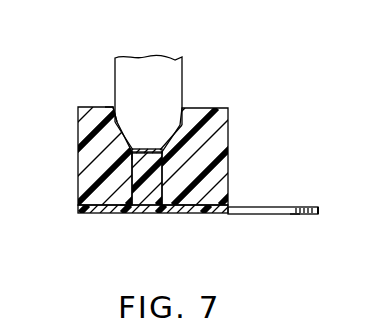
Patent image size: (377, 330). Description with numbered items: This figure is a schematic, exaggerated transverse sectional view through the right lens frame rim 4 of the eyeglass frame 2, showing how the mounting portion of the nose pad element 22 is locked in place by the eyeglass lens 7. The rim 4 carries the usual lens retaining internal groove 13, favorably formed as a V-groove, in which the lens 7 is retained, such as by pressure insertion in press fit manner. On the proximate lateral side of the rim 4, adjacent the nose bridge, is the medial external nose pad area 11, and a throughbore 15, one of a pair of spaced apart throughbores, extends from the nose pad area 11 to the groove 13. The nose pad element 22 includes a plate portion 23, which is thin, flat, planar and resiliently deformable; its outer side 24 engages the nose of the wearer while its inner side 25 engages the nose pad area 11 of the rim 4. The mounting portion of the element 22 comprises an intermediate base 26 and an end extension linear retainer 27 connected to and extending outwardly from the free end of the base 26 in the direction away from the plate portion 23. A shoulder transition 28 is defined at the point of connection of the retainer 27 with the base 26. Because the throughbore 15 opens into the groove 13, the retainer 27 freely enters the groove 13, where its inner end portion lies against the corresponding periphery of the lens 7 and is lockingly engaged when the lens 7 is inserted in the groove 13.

The eyeglass frame 2 is at (229, 195).
The eyeglass lens frame rim 4 is at (228, 137).
The eyeglass lens 7 is at (165, 76).
The nose pad area 11 is at (108, 210).
The lens retaining internal groove 13 is at (113, 107).
The throughbore 15 is at (126, 204).
The nose pad element 22 is at (318, 212).
The plate portion 23 is at (294, 215).
The outer side 24 is at (261, 214).
The inner side 25 is at (304, 209).
The base 26 is at (157, 192).
The retainer 27 is at (152, 150).
The shoulder transition 28 is at (130, 152).